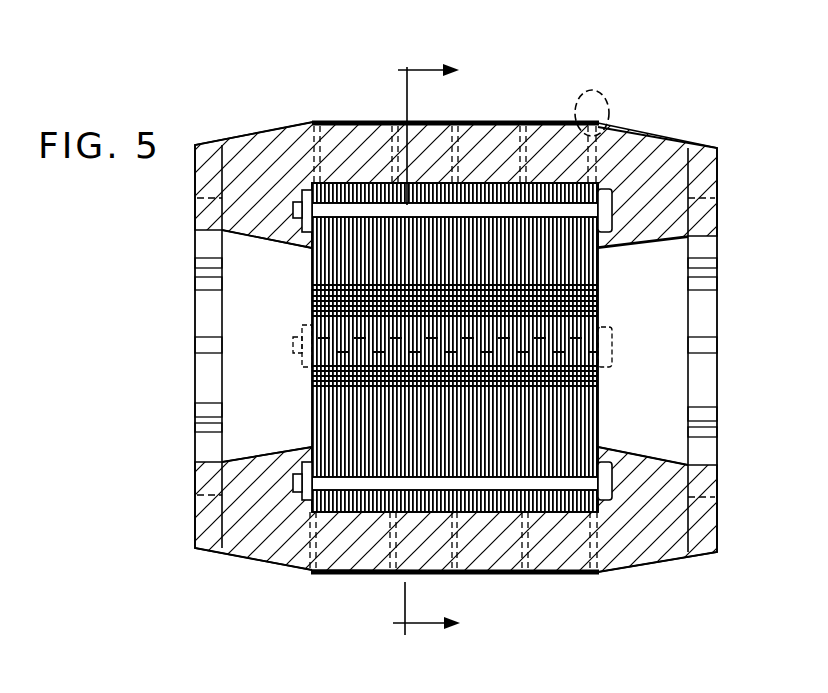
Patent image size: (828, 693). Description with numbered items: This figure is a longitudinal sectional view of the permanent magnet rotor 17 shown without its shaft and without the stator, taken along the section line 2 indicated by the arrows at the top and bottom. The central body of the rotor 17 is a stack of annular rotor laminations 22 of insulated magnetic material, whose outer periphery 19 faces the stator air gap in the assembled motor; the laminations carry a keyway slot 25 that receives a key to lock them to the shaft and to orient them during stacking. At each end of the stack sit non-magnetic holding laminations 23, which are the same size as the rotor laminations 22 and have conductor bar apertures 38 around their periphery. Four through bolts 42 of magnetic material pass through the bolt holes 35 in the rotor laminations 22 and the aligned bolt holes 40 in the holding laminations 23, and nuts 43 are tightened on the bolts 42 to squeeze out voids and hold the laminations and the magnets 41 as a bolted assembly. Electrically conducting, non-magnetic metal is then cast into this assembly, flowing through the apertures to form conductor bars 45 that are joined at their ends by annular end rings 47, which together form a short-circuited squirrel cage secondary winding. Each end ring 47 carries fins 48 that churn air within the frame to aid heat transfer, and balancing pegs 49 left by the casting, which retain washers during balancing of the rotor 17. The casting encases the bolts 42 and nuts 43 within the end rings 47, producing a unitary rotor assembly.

The section line 2- 2 is at (421, 349).
The rotor 17 is at (358, 600).
The periphery 19 is at (472, 123).
The rotor laminations 22 is at (522, 123).
The holding laminations 23 is at (315, 108).
The keyway slot 25 is at (590, 306).
The bolt holes 35 is at (565, 188).
The conductor bar apertures 38 is at (326, 127).
The bolt holes 40 is at (543, 214).
The magnet 41 is at (343, 217).
The through bolts 42 is at (419, 185).
The nuts 43 is at (310, 248).
The conductor bars 45 is at (373, 130).
The end rings 47 is at (280, 138).
The fins 48 is at (208, 185).
The balancing pegs 49 is at (206, 414).